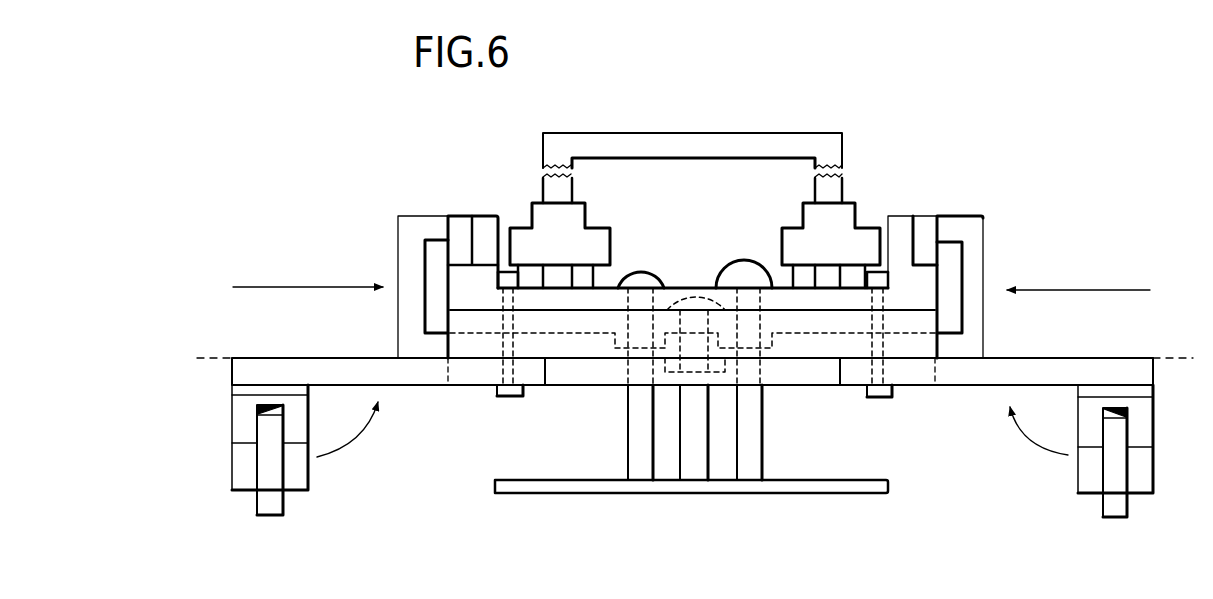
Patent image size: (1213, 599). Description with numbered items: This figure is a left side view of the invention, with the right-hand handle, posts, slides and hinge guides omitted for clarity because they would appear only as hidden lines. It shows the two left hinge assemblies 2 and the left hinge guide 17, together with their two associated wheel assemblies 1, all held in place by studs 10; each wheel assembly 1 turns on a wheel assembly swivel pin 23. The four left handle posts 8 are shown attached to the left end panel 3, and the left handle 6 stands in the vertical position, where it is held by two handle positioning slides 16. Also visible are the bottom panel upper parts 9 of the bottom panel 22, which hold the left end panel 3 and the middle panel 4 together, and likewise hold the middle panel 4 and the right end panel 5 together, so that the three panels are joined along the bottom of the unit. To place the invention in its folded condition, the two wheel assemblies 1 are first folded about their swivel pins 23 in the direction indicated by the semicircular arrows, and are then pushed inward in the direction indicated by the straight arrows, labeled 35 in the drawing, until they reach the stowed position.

The wheel assembly 1 is at (232, 423).
The left hinge assembly 2 is at (320, 358).
The left end panel 3 is at (898, 218).
The middle panel 4 is at (457, 216).
The right end panel 5 is at (407, 216).
The left handle 6 is at (682, 133).
The left handle post 8 is at (518, 270).
The bottom panel upper part 9 is at (700, 291).
The stud 10 is at (498, 395).
The handle positioning slide 16 is at (532, 205).
The left hinge guide 17 is at (800, 385).
The bottom panel 22 is at (658, 493).
The wheel assembly swivel pin 23 is at (263, 408).
The bolt 35 is at (505, 300).